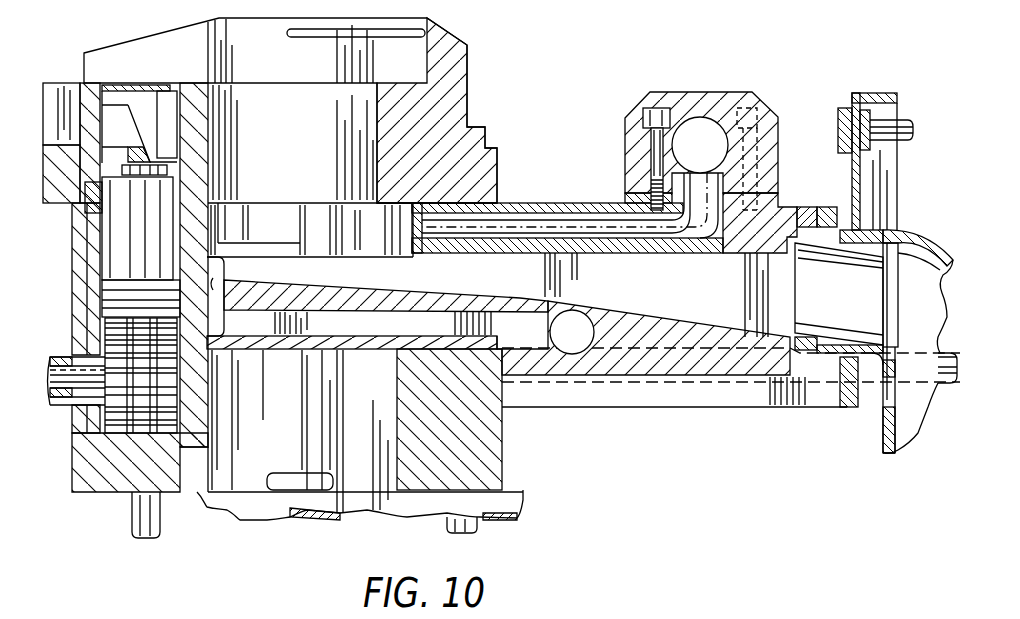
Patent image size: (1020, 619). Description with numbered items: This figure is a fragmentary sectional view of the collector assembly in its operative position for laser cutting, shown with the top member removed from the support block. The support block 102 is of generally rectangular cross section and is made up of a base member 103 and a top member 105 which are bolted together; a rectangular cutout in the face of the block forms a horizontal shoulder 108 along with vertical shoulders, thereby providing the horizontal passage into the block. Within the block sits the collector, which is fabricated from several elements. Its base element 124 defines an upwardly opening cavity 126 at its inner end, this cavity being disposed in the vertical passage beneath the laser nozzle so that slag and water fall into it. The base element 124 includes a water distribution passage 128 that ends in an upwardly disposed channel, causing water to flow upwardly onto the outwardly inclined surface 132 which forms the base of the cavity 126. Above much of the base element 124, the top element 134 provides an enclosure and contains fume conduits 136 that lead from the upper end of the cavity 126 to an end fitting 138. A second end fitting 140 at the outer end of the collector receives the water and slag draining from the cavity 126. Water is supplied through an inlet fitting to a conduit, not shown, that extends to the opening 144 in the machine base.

The support block 102 is at (96, 481).
The base member 103 is at (502, 467).
The top member 105 is at (450, 80).
The horizontal shoulder 108 is at (480, 343).
The base element 124 is at (707, 368).
The cavity 126 is at (365, 273).
The water distribution passage 128 is at (223, 292).
The outwardly inclined surface 132 is at (427, 287).
The top element 134 is at (563, 202).
The fume conduits 136 is at (596, 224).
The end fitting 138 is at (708, 118).
The end fitting 140 is at (907, 230).
The opening 144 is at (582, 341).